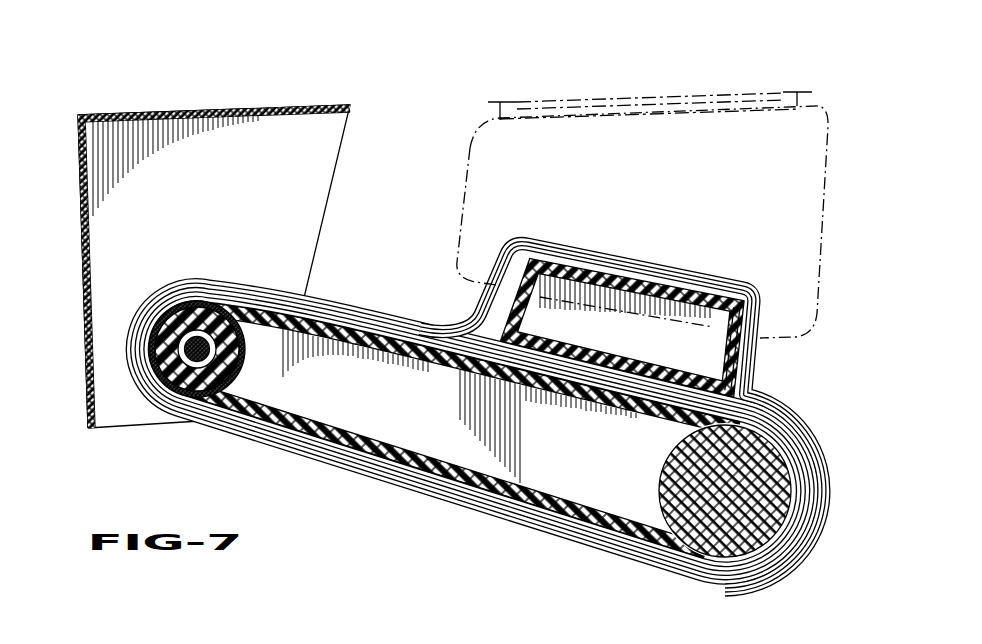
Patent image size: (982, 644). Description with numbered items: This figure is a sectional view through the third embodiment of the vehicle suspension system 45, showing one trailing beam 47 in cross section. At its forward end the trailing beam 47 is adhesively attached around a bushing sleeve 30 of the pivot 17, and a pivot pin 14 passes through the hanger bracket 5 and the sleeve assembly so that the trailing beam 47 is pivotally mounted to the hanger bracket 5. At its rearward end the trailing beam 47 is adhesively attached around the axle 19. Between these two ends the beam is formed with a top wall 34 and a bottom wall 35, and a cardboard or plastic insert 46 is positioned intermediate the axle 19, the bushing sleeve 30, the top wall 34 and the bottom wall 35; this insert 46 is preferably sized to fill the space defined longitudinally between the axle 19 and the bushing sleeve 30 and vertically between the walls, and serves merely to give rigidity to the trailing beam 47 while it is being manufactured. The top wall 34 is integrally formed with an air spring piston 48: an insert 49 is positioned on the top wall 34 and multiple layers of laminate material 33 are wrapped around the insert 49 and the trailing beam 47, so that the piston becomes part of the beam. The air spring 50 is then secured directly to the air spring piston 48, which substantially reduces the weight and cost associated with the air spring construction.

The hanger bracket 5 is at (243, 142).
The pivot pin 14 is at (193, 345).
The pivot 17 is at (213, 310).
The axle 19 is at (757, 520).
The bushing sleeve 30 is at (185, 302).
The layers of laminate material 33 is at (630, 262).
The top wall 34 is at (403, 330).
The bottom wall 35 is at (413, 478).
The suspension system 45 is at (801, 370).
The insert 46 is at (555, 507).
The trailing beam 47 is at (353, 293).
The air spring piston 48 is at (765, 284).
The insert 49 is at (687, 292).
The air spring 50 is at (827, 120).